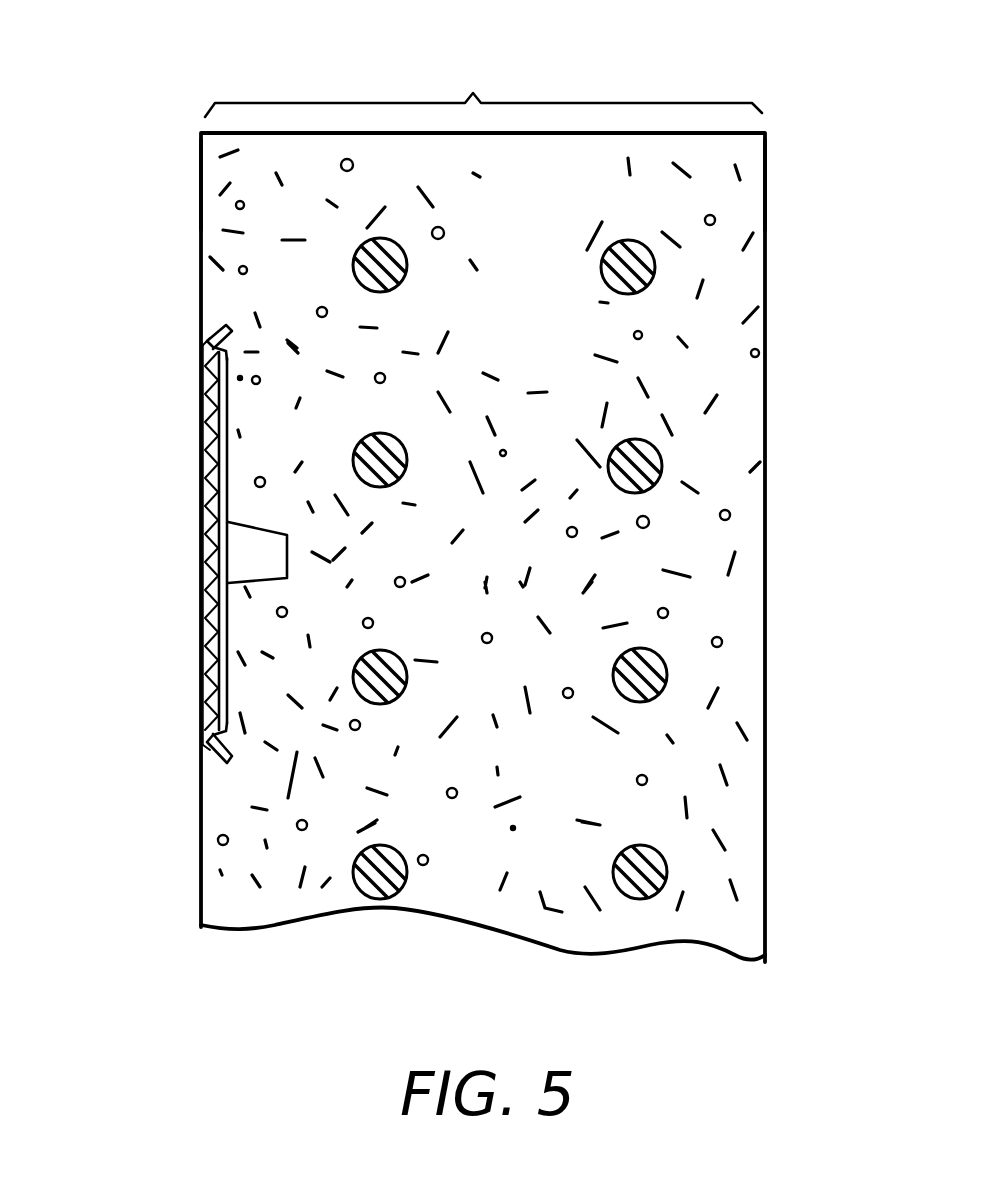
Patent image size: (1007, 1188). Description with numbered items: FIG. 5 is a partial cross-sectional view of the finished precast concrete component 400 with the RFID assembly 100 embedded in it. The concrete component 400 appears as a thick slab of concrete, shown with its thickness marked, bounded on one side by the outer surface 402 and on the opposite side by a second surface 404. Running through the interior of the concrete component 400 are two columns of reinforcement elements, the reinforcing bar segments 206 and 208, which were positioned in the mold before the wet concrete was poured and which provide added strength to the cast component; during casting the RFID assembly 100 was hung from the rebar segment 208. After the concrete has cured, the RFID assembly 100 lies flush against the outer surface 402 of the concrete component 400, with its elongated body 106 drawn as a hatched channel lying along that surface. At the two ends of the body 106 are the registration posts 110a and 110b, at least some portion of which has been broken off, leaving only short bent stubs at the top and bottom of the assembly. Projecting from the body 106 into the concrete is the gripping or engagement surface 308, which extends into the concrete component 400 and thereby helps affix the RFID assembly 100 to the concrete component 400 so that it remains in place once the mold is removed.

The RFID assembly 100 is at (156, 543).
The clip body 106 is at (203, 622).
The registration post 110a is at (228, 330).
The registration post 110b is at (205, 765).
The reinforcing bar segment 206 is at (652, 270).
The reinforcing bar segment 208 is at (353, 263).
The gripping or engagement surface 308 is at (265, 530).
The concrete component 400 is at (792, 398).
The outer surface 402 is at (199, 205).
The second surface 404 is at (767, 185).